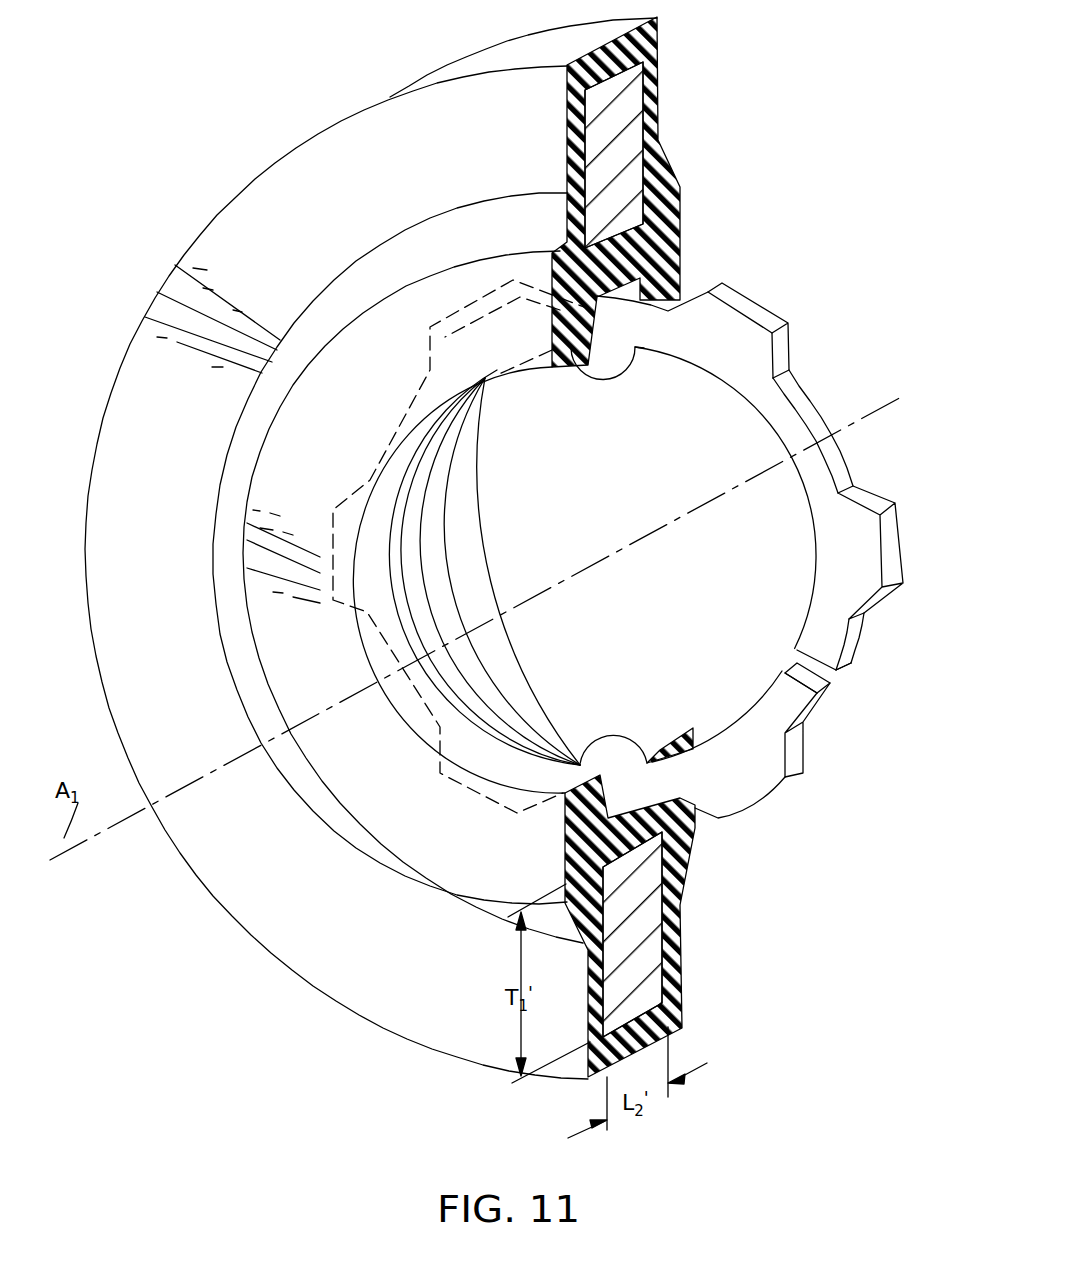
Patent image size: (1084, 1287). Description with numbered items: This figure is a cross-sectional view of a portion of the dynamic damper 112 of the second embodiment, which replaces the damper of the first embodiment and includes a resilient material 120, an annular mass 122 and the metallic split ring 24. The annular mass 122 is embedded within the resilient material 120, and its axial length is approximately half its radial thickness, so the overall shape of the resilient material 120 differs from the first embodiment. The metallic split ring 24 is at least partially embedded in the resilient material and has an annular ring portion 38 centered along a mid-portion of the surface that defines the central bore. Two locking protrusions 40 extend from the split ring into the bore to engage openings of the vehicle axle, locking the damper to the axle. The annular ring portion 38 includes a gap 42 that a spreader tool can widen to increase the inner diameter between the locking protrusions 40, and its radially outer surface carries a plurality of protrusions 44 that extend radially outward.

The dynamic damper 112 is at (285, 148).
The resilient material 120 is at (620, 125).
The annular mass 122 is at (660, 249).
The metallic split ring 24 is at (781, 309).
The annular ring portion 38 is at (840, 536).
The locking protrusions 40 is at (596, 374).
The gap 42 is at (832, 684).
The protrusions 44 is at (733, 323).